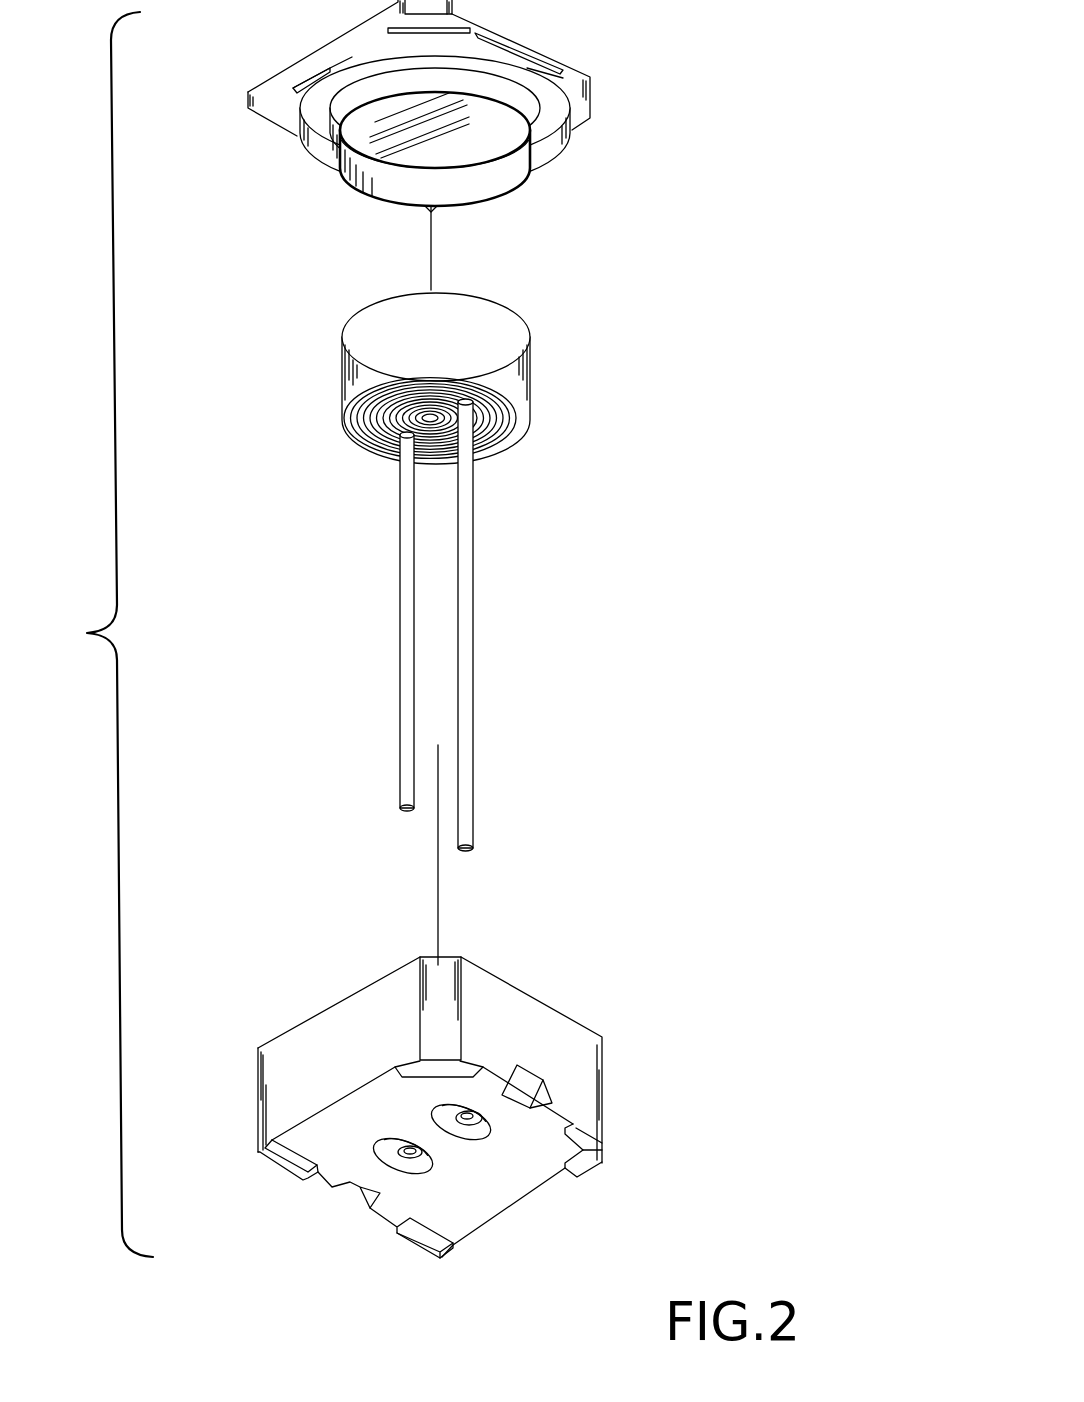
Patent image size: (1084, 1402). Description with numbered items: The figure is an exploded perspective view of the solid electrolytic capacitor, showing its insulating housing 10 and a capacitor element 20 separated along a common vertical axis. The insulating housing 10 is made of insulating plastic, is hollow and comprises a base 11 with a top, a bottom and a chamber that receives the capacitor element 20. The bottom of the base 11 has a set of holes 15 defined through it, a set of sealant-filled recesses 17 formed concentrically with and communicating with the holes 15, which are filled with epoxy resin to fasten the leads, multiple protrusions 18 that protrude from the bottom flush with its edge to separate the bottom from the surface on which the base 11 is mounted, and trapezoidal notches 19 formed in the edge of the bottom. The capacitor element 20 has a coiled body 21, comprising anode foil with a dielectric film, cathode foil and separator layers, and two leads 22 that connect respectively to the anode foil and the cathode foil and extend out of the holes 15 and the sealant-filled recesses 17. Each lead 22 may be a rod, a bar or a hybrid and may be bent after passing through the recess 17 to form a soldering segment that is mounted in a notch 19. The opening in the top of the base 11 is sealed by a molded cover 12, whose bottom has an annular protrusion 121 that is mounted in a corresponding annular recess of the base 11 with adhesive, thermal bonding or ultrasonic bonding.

The insulating housing 10 is at (475, 1094).
The base 11 is at (587, 1093).
The cover 12 is at (527, 50).
The annular protrusion 121 is at (540, 127).
The holes 15 is at (468, 1118).
The sealant-filled recesses 17 is at (483, 1130).
The protrusions 18 is at (592, 1150).
The notches 19 is at (522, 1083).
The capacitor element 20 is at (487, 565).
The body 21 is at (518, 375).
The leads 22 is at (407, 622).